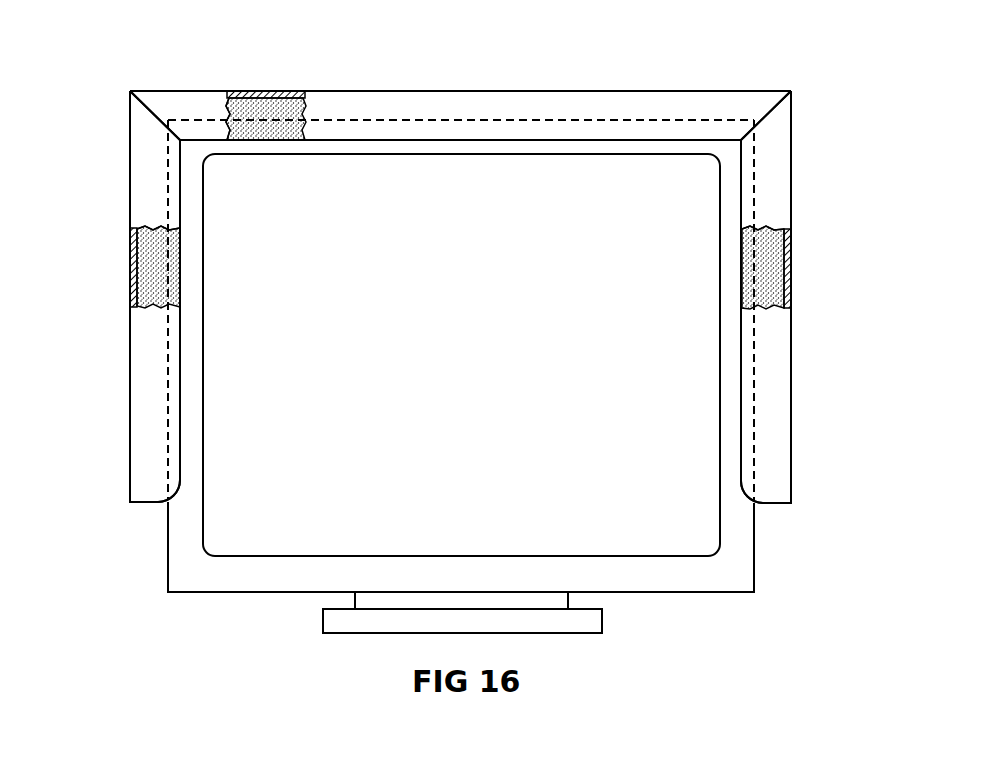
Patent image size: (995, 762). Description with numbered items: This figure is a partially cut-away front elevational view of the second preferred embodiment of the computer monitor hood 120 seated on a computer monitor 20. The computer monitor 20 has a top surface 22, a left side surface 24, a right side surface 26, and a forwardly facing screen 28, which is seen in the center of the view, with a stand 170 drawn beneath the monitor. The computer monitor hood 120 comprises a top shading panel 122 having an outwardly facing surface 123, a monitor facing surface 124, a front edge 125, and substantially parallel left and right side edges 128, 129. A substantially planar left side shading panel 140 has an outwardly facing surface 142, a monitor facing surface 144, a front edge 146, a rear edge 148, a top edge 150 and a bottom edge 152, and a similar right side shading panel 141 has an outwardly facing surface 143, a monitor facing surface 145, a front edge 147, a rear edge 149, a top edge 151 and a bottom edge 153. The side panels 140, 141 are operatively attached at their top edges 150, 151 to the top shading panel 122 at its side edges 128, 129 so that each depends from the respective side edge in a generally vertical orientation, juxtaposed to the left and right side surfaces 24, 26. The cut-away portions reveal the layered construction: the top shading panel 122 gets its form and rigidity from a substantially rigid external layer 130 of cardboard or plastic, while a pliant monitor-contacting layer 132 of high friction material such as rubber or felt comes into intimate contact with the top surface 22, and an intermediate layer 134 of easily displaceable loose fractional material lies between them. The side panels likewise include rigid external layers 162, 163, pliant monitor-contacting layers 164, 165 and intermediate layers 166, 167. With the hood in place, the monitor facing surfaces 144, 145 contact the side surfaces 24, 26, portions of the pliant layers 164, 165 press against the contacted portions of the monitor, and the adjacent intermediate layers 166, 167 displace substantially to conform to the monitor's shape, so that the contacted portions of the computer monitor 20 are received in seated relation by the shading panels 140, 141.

The computer monitor 20 is at (170, 676).
The top surface 22 is at (452, 120).
The left side surface 24 is at (166, 580).
The right side surface 26 is at (755, 580).
The forwardly facing screen 28 is at (475, 360).
The computer monitor hood 120 is at (607, 105).
The top shading panel 122 is at (523, 107).
The outwardly facing surface 123 is at (358, 91).
The monitor facing surface 124 is at (393, 143).
The front edge 125 is at (582, 135).
The left side edge 128 is at (130, 91).
The right side edge 129 is at (791, 91).
The substantially rigid external layer 130 is at (270, 91).
The pliant monitor-contacting layer 132 is at (272, 140).
The intermediate layer 134 is at (227, 112).
The left side shading panel 140 is at (143, 157).
The right side shading panel 141 is at (780, 170).
The outwardly facing surface 142 is at (130, 318).
The outwardly facing surface 143 is at (791, 328).
The monitor facing surface 144 is at (180, 336).
The monitor facing surface 145 is at (741, 349).
The front edge 146 is at (147, 443).
The front edge 147 is at (773, 443).
The rear edge 148 is at (147, 367).
The rear edge 149 is at (773, 366).
The top edge 150 is at (130, 91).
The top edge 151 is at (791, 91).
The bottom edge 152 is at (143, 505).
The bottom edge 153 is at (777, 505).
The substantially rigid external layer 162 is at (130, 263).
The substantially rigid external layer 163 is at (790, 242).
The pliant monitor-contacting layer 164 is at (180, 242).
The pliant monitor-contacting layer 165 is at (741, 243).
The intermediate layer 166 is at (170, 285).
The intermediate layer 167 is at (745, 283).
The stand 170 is at (462, 677).